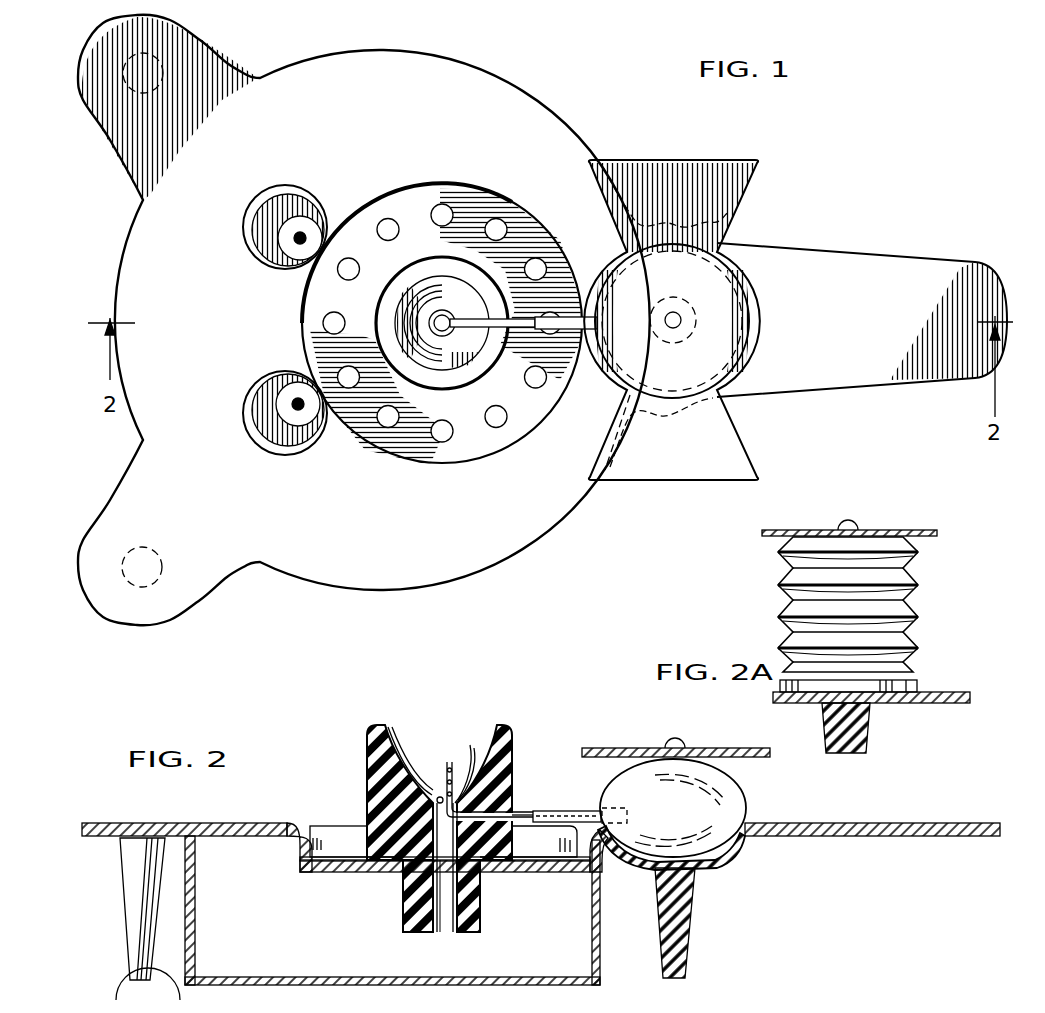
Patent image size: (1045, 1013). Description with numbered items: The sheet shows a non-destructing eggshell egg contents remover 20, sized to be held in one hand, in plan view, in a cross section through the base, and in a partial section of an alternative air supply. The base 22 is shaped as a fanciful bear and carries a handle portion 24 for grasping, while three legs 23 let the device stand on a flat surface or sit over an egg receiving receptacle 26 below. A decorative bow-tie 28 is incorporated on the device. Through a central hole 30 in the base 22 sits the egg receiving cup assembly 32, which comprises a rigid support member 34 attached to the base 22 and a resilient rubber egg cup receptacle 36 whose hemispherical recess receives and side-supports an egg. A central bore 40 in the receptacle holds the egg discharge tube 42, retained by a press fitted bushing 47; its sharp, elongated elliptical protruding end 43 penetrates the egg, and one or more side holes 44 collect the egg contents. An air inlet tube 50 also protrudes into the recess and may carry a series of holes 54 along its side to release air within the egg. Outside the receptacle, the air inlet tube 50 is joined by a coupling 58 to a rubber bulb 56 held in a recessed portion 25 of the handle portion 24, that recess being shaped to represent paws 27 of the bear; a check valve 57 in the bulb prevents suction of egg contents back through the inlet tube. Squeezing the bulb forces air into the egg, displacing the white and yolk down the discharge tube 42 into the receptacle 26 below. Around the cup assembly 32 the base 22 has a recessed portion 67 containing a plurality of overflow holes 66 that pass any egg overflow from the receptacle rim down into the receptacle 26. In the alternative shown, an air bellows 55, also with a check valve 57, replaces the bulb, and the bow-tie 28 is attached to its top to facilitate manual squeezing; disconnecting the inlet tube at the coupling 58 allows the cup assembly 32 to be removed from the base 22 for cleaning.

In FIG. 1, the non-destructing eggshell egg contents remover 20 is at (548, 97).
In FIG. 1, the base 22 is at (445, 52).
In FIG. 1, the legs 23 is at (160, 53).
In FIG. 2, the legs 23 is at (137, 886).
In FIG. 1, the handle portion 24 is at (845, 329).
In FIG. 2, the handle portion 24 is at (880, 837).
In FIG. 2, the recessed portion 25 is at (715, 865).
In FIG. 2, the egg receiving receptacle 26 is at (605, 955).
In FIG. 1, the paws 27 is at (728, 212).
In FIG. 1, the bow-tie 28 is at (698, 160).
In FIG. 2A, the bow-tie 28 is at (898, 528).
In FIG. 2, the bow-tie 28 is at (615, 746).
In FIG. 2, the central hole 30 is at (483, 868).
In FIG. 2, the egg receiving cup assembly 32 is at (368, 727).
In FIG. 2, the support member 34 is at (480, 902).
In FIG. 2, the egg cup receptacle 36 is at (503, 726).
In FIG. 1, the central bore 40 is at (445, 318).
In FIG. 2, the central bore 40 is at (433, 932).
In FIG. 2, the egg discharge tube 42 is at (408, 870).
In FIG. 2, the protruding end 43 is at (410, 743).
In FIG. 2, the side holes 44 is at (440, 790).
In FIG. 2, the press fitted bushing 47 is at (458, 932).
In FIG. 1, the air inlet tube 50 is at (452, 327).
In FIG. 2, the air inlet tube 50 is at (518, 814).
In FIG. 2, the holes 54 is at (466, 764).
In FIG. 2A, the air bellows 55 is at (787, 595).
In FIG. 2, the rubber bulb 56 is at (730, 800).
In FIG. 2A, the check valve 57 is at (905, 683).
In FIG. 2, the check valve 57 is at (622, 808).
In FIG. 2A, the coupling 58 is at (957, 703).
In FIG. 2, the coupling 58 is at (557, 812).
In FIG. 1, the overflow holes 66 is at (536, 258).
In FIG. 2, the overflow holes 66 is at (337, 872).
In FIG. 1, the recessed portion 67 is at (415, 205).
In FIG. 2, the recessed portion 67 is at (330, 845).